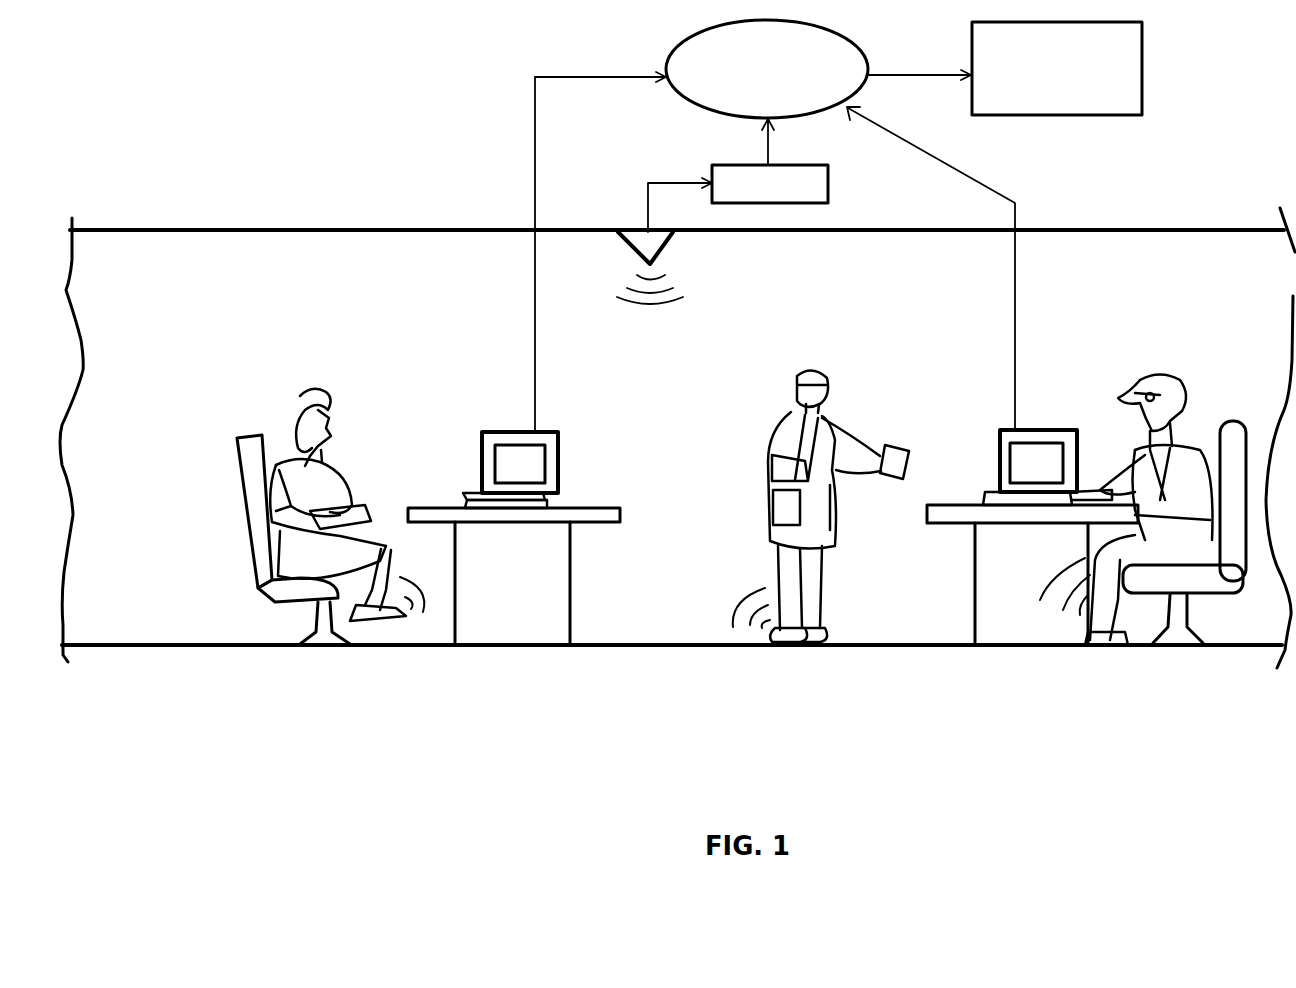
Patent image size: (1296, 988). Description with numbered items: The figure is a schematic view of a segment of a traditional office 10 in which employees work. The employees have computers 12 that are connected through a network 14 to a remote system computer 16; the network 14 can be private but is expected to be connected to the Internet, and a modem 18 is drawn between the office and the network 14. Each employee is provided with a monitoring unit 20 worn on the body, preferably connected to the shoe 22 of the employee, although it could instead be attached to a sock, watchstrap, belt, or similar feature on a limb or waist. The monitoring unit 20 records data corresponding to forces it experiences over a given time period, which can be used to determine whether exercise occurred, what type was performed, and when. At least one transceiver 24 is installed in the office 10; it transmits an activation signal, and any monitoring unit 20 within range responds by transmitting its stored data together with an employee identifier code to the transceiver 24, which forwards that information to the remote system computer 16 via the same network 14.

The office 10 is at (372, 140).
The computers 12 is at (560, 445).
The network 14 is at (686, 103).
The remote system computer 16 is at (1055, 115).
The modem 18 is at (832, 183).
The monitoring unit 20 is at (800, 632).
The shoe 22 is at (806, 638).
The transceiver 24 is at (667, 250).